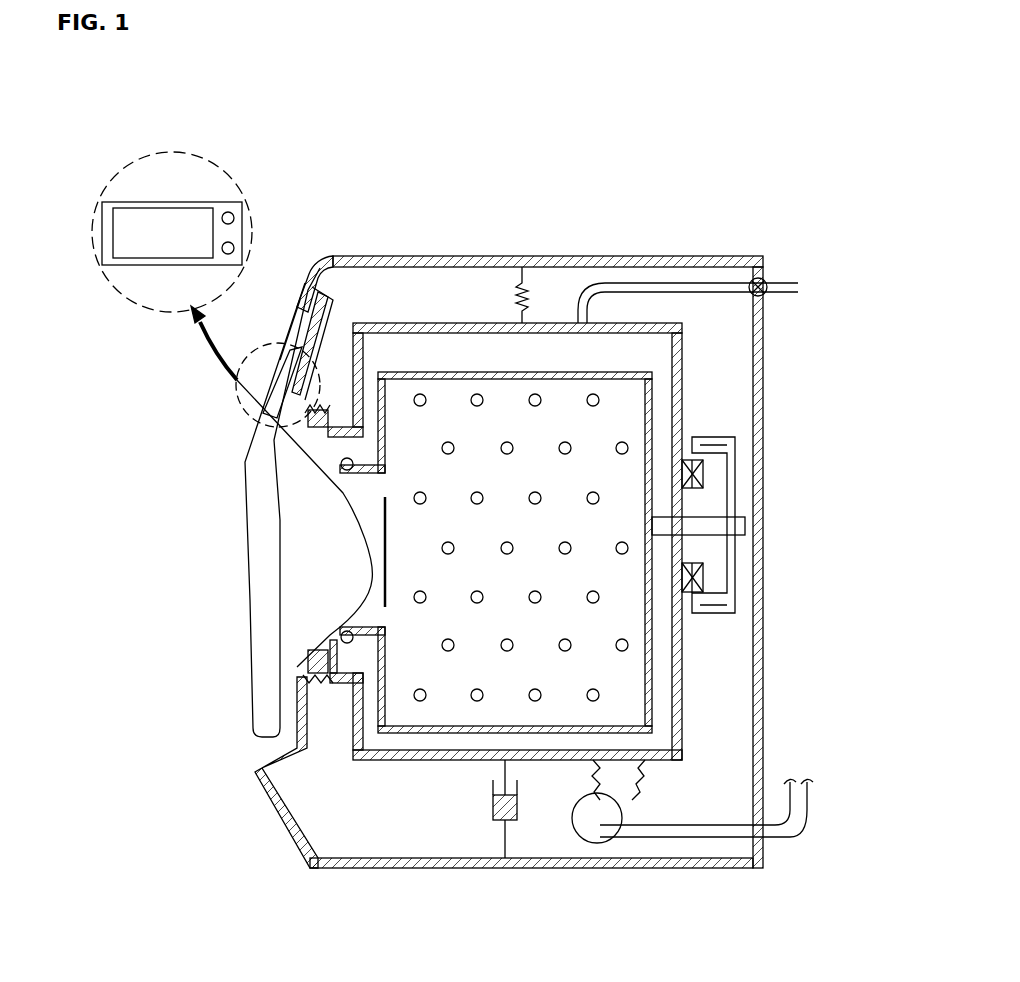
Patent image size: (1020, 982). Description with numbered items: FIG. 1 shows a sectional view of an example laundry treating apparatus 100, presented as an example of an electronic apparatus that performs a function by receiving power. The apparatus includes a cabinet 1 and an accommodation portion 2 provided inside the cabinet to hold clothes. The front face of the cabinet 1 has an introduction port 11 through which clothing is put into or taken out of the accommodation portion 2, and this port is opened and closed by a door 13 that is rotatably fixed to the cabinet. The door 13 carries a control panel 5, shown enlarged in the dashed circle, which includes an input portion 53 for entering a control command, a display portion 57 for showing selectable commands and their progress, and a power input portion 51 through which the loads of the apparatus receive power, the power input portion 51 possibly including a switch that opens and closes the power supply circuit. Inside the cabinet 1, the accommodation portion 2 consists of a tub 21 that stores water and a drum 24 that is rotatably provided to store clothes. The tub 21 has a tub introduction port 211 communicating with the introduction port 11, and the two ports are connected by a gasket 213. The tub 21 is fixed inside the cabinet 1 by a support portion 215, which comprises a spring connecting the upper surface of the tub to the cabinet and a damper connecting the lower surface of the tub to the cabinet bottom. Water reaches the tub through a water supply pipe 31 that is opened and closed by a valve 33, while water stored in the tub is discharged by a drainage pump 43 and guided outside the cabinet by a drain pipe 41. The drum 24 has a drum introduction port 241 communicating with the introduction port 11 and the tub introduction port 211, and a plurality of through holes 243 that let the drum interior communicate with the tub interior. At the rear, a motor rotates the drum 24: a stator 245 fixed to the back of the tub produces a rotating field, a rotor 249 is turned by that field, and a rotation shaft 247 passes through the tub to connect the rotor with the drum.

The laundry treating apparatus 100 is at (596, 129).
The cabinet 1 is at (340, 256).
The accommodation portion 2 is at (467, 190).
The control panel 5 is at (262, 392).
The introduction port 11 is at (312, 657).
The door 13 is at (255, 570).
The tub 21 is at (470, 323).
The drum 24 is at (418, 372).
The water supply pipe 31 is at (700, 283).
The valve 33 is at (767, 294).
The drain pipe 41 is at (687, 837).
The drainage pump 43 is at (620, 817).
The power input portion 51 is at (235, 216).
The input portion 53 is at (238, 249).
The display portion 57 is at (178, 218).
The tub introduction port 211 is at (345, 678).
The gasket 213 is at (315, 655).
The support portion 215 is at (522, 290).
The drum introduction port 241 is at (357, 490).
The through holes 243 is at (420, 700).
The stator 245 is at (705, 473).
The rotation shaft 247 is at (748, 526).
The rotor 249 is at (735, 578).